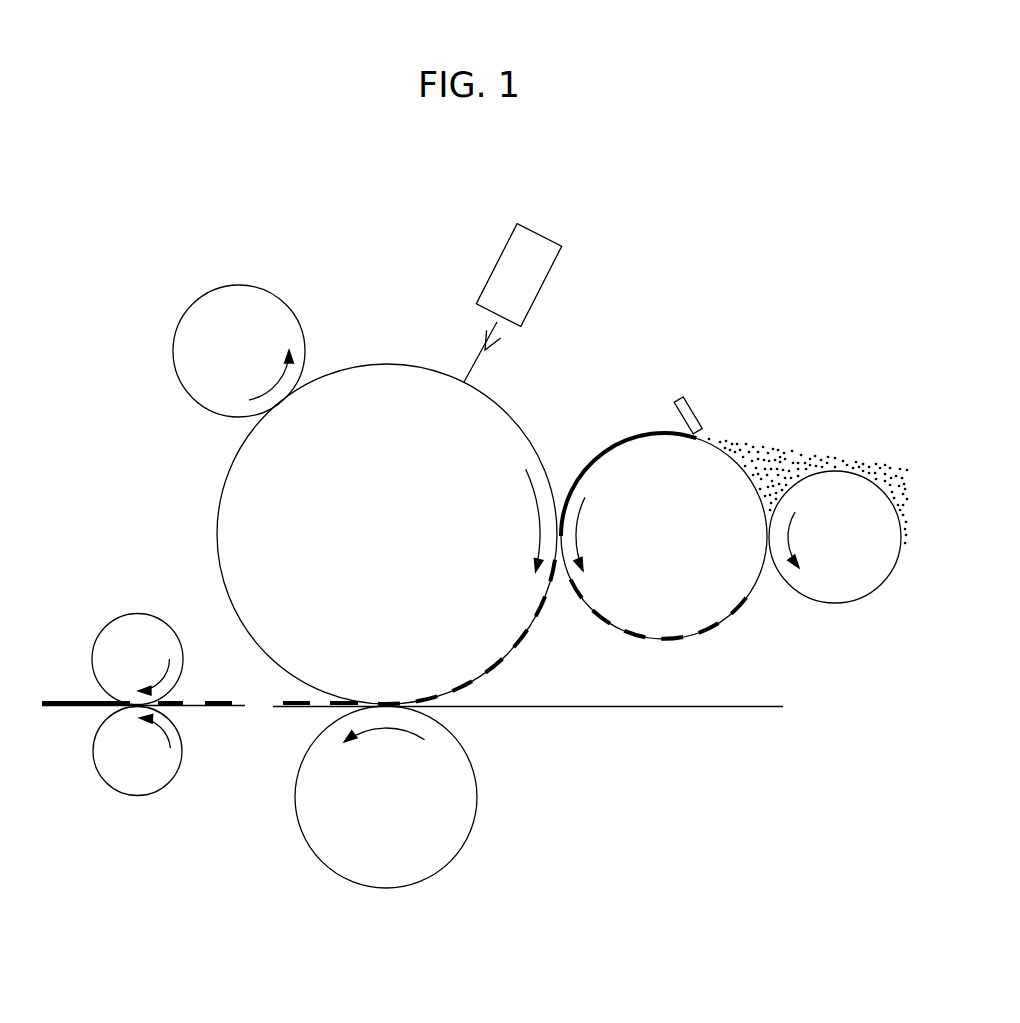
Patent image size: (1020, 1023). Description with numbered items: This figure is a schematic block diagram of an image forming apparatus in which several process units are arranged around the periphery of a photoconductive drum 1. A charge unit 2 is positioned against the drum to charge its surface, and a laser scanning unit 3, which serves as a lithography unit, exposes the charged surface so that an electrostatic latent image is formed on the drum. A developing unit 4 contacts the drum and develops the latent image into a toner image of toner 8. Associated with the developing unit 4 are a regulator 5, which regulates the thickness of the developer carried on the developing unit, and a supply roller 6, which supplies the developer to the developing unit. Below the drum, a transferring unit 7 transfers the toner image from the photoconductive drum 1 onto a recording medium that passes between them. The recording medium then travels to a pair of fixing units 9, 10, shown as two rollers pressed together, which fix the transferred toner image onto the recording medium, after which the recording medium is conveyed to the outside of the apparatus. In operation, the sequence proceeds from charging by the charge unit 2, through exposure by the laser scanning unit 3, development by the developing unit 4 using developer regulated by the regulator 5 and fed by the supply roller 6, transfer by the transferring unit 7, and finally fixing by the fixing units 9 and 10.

The photoconductive drum 1 is at (387, 382).
The charge unit 2 is at (210, 310).
The laser scanning unit 3 is at (540, 250).
The developing unit 4 is at (633, 460).
The regulator 5 is at (685, 397).
The supply roller 6 is at (837, 487).
The transferring unit 7 is at (460, 815).
The toner 8 is at (290, 707).
The fixing unit 9 is at (125, 630).
The fixing unit 10 is at (125, 782).